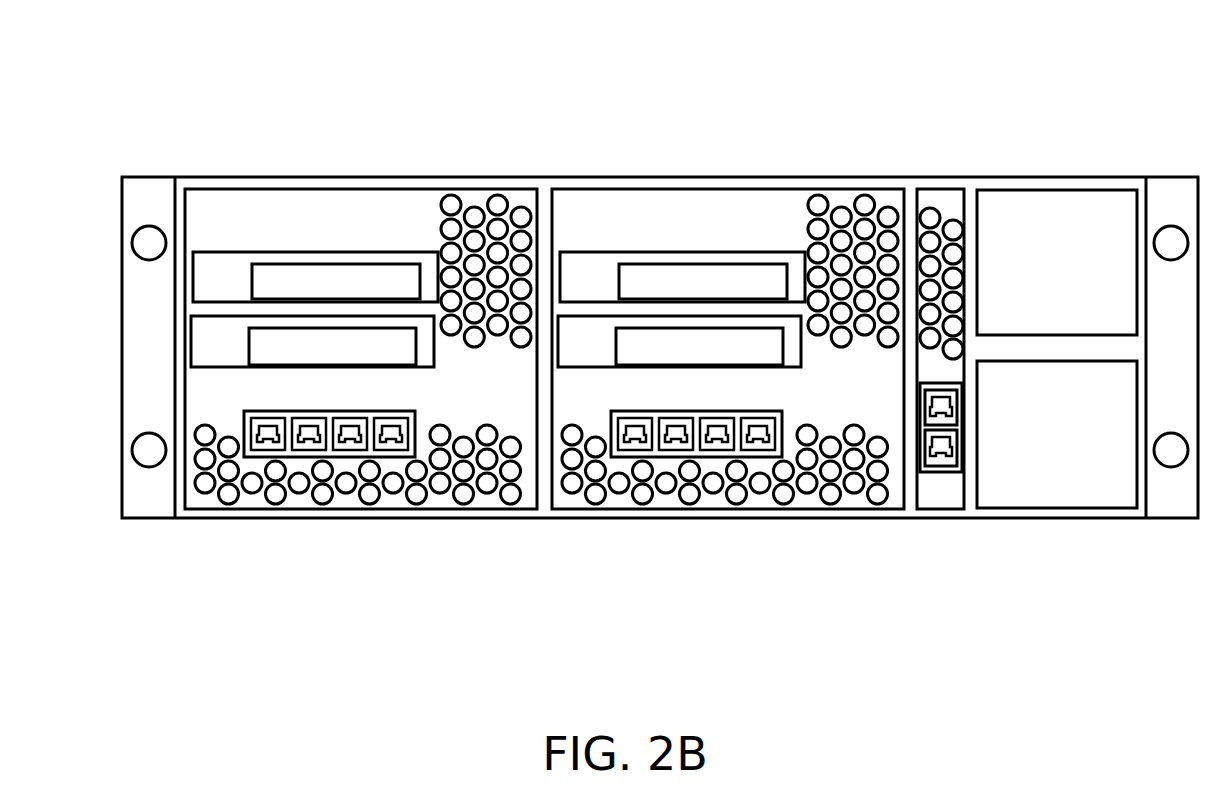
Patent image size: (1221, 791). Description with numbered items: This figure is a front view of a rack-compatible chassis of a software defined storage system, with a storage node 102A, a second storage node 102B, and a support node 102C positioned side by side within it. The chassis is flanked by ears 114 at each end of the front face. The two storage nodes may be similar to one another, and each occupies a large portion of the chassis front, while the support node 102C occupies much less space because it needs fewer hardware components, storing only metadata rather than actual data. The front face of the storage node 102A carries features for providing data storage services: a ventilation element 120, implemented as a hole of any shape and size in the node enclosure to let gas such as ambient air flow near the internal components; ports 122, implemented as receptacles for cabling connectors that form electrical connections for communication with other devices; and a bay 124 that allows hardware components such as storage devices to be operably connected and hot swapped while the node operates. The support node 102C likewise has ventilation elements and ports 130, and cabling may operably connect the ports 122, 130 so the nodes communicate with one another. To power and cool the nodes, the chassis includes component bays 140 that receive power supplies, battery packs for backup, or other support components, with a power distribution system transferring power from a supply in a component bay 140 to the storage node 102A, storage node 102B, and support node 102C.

The storage node 102A is at (308, 390).
The storage node 102B is at (592, 202).
The support node 102C is at (887, 373).
The ear 114 is at (1173, 190).
The ventilation element 120 is at (228, 493).
The ports 122 is at (415, 443).
The bay 124 is at (313, 273).
The ports 130 is at (945, 475).
The component bays 140 is at (1125, 607).